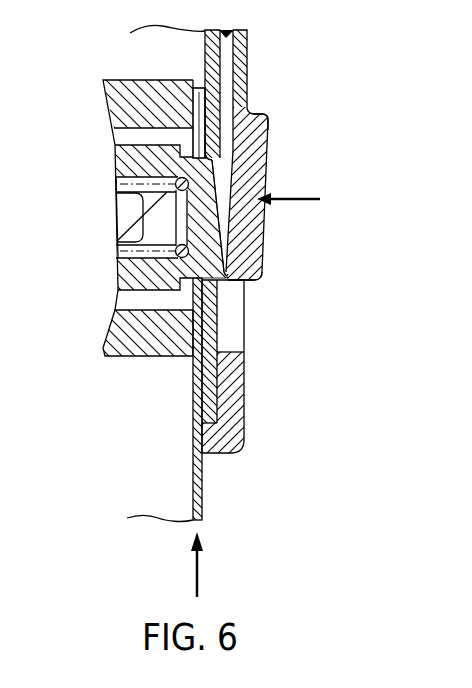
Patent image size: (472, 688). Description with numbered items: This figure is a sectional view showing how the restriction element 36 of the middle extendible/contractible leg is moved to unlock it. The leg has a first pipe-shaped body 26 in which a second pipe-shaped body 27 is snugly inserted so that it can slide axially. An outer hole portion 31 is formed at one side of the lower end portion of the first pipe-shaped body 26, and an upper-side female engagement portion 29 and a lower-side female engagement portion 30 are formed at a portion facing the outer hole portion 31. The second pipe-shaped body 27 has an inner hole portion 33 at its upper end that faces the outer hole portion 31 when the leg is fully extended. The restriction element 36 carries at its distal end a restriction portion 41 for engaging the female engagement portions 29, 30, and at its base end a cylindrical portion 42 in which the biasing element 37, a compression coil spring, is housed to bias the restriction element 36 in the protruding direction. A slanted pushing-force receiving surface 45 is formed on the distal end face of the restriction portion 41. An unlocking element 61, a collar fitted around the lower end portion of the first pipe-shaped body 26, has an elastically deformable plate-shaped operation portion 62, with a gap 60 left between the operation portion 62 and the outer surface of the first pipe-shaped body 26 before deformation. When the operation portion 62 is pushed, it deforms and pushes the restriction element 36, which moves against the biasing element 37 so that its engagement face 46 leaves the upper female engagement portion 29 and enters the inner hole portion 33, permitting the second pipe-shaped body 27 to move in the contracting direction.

The first pipe-shaped body 26 is at (210, 82).
The second pipe-shaped body 27 is at (203, 490).
The upper-side female engagement portion 29 is at (248, 198).
The lower-side female engagement portion 30 is at (243, 281).
The outer hole portion 31 is at (218, 180).
The inner hole portion 33 is at (205, 292).
The restriction element 36 is at (123, 268).
The biasing element 37 is at (135, 201).
The restriction portion 41 is at (210, 245).
The cylindrical portion 42 is at (132, 160).
The pushing-force receiving surface 45 is at (226, 220).
The engagement face 46 is at (193, 96).
The gap 60 is at (228, 100).
The unlocking element 61 is at (243, 71).
The operation portion 62 is at (268, 125).